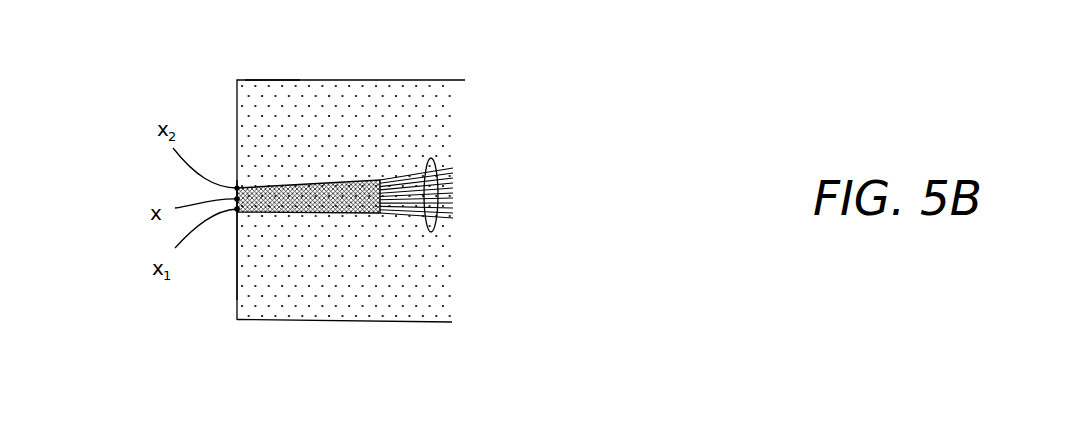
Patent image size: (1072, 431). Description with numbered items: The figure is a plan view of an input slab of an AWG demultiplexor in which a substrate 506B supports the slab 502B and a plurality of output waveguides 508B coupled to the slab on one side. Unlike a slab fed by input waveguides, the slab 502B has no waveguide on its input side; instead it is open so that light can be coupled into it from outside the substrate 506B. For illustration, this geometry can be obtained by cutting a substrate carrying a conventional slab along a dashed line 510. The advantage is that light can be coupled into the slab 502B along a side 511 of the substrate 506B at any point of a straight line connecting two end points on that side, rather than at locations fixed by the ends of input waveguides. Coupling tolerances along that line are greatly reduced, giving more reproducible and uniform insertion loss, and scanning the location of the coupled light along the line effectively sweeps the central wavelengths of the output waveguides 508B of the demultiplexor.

The slab 502B is at (352, 180).
The substrate 506B is at (340, 321).
The output waveguides 508B is at (431, 158).
The dashed line 510 is at (257, 40).
The side 511 is at (237, 292).